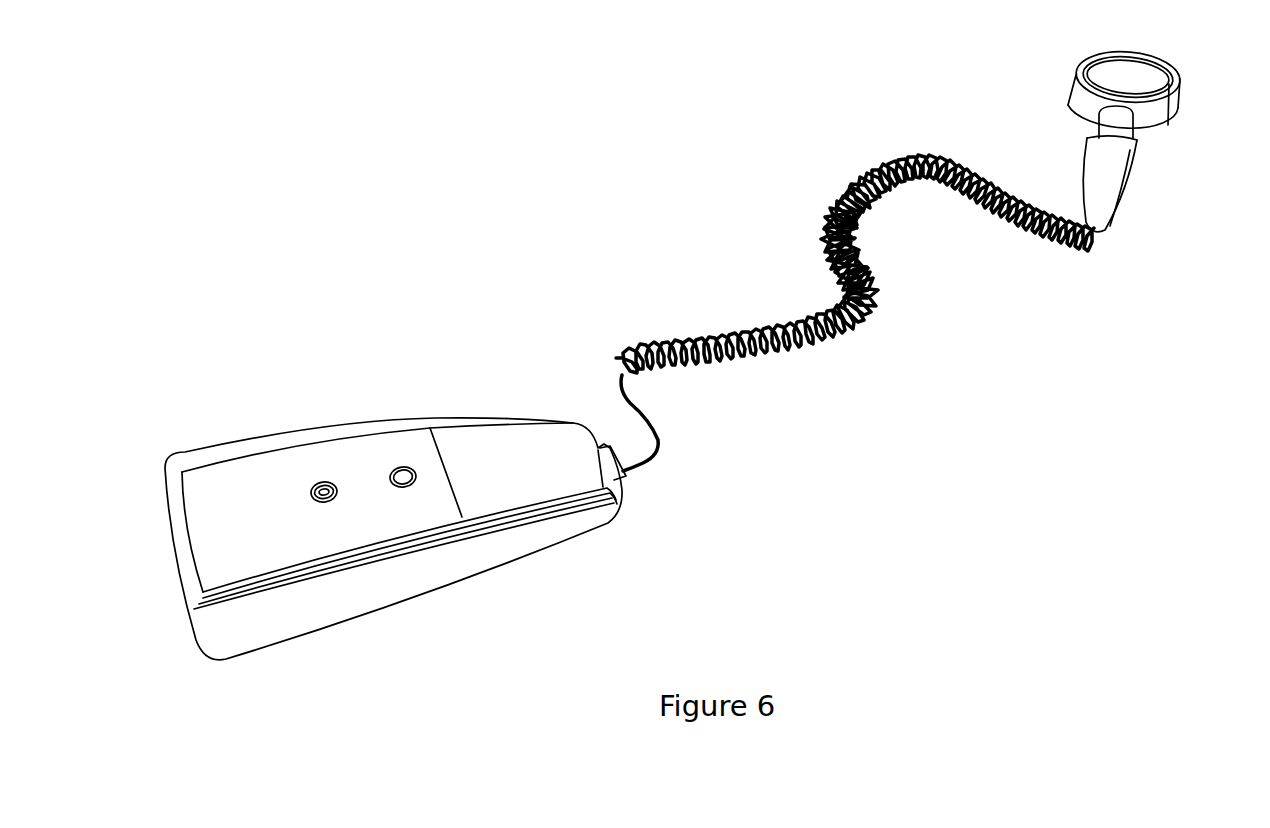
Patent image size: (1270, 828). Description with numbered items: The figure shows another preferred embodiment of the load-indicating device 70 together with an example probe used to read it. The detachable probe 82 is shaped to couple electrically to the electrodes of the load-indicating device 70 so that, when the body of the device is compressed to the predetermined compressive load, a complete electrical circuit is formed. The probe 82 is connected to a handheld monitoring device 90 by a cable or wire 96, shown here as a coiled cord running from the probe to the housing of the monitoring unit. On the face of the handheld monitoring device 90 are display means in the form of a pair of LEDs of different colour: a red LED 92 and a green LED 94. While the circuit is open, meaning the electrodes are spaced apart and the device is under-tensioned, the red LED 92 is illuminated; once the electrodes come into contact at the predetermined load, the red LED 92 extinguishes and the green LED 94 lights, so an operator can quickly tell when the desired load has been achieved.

The load-indicating device 70 is at (1153, 112).
The detachable probe 82 is at (1103, 197).
The handheld monitoring device 90 is at (217, 447).
The red LED 92 is at (330, 481).
The green LED 94 is at (408, 467).
The cable or wire 96 is at (827, 334).